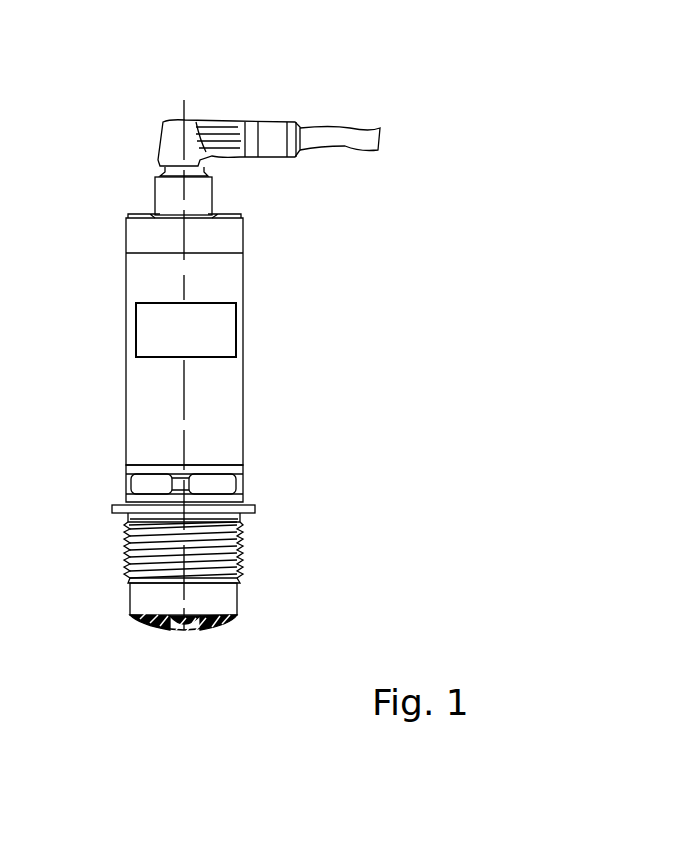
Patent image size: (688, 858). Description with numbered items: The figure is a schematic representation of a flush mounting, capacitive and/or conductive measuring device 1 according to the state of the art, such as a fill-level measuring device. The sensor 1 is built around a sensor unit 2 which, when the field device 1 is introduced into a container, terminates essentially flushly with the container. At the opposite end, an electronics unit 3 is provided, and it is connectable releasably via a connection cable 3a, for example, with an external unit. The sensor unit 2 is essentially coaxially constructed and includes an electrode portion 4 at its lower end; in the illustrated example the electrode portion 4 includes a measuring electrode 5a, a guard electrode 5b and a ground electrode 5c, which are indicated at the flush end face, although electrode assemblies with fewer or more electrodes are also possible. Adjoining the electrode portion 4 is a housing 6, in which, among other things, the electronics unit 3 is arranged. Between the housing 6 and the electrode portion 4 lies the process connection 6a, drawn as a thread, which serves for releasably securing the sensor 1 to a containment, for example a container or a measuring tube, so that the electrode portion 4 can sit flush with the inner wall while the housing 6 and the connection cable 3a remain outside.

The measuring device 1 is at (120, 96).
The sensor unit 2 is at (356, 541).
The electronics unit 3 is at (186, 330).
The connection cable 3a is at (346, 111).
The electrode portion 4 is at (244, 597).
The measuring electrode 5a is at (189, 628).
The guard electrode 5b is at (220, 629).
The ground electrode 5c is at (143, 628).
The housing 6 is at (254, 375).
The process connection 6a is at (245, 539).